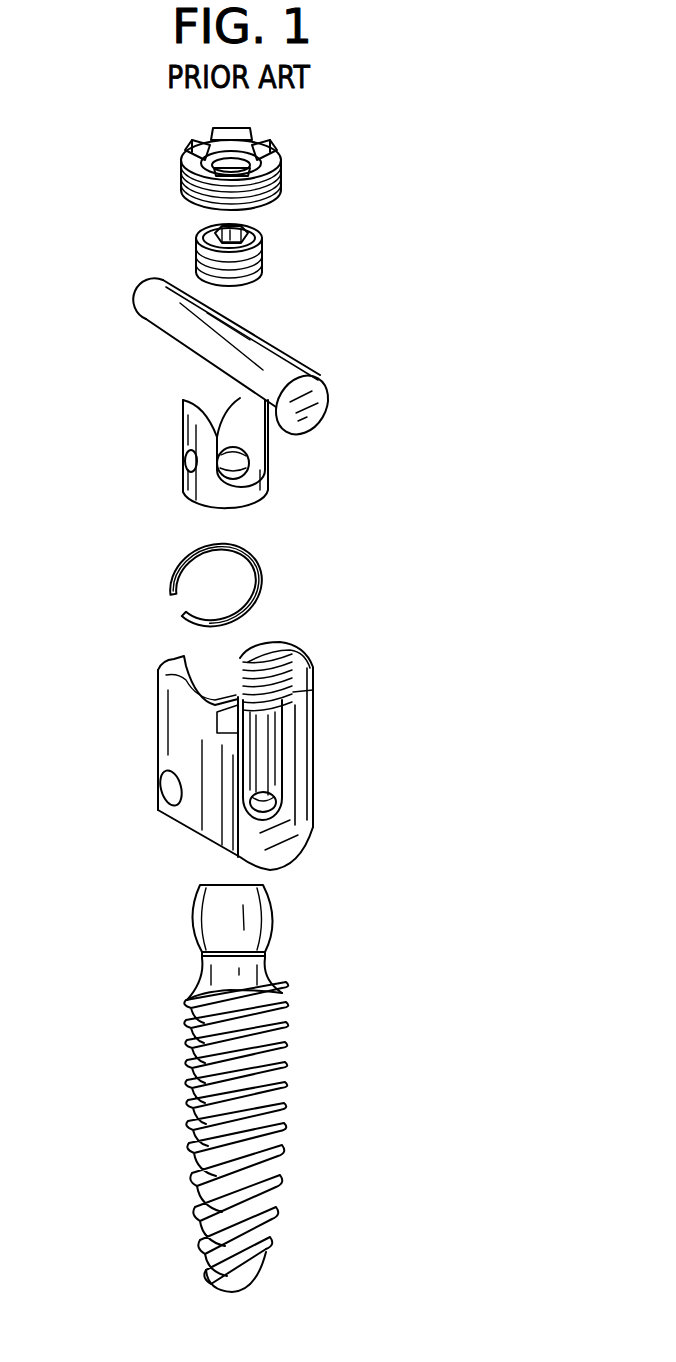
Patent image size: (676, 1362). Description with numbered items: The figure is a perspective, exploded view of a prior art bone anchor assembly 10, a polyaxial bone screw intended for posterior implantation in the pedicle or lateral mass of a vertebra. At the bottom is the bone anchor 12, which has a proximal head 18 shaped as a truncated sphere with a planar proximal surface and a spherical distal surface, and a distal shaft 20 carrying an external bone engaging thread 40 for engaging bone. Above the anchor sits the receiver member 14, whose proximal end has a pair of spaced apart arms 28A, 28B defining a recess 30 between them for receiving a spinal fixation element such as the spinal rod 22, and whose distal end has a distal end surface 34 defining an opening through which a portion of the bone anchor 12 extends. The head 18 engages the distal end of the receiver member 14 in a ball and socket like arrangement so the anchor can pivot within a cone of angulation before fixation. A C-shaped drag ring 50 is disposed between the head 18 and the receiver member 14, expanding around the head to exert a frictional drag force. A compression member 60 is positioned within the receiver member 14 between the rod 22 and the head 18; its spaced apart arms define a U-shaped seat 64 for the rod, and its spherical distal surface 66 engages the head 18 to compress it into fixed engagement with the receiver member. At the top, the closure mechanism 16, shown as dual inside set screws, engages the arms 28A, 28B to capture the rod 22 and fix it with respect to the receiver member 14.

The bone anchor assembly 10 is at (466, 327).
The bone anchor 12 is at (362, 1014).
The receiver member 14 is at (312, 757).
The closure mechanism 16 is at (336, 120).
The proximal head 18 is at (268, 922).
The distal shaft 20 is at (268, 1158).
The spinal rod 22 is at (262, 356).
The arm 28A is at (317, 731).
The arm 28B is at (168, 723).
The recess 30 is at (230, 775).
The distal end surface 34 is at (283, 867).
The external bone engaging thread 40 is at (192, 1073).
The drag ring 50 is at (262, 578).
The compression member 60 is at (270, 455).
The U-shaped seat 64 is at (210, 400).
The spherical distal surface 66 is at (252, 503).